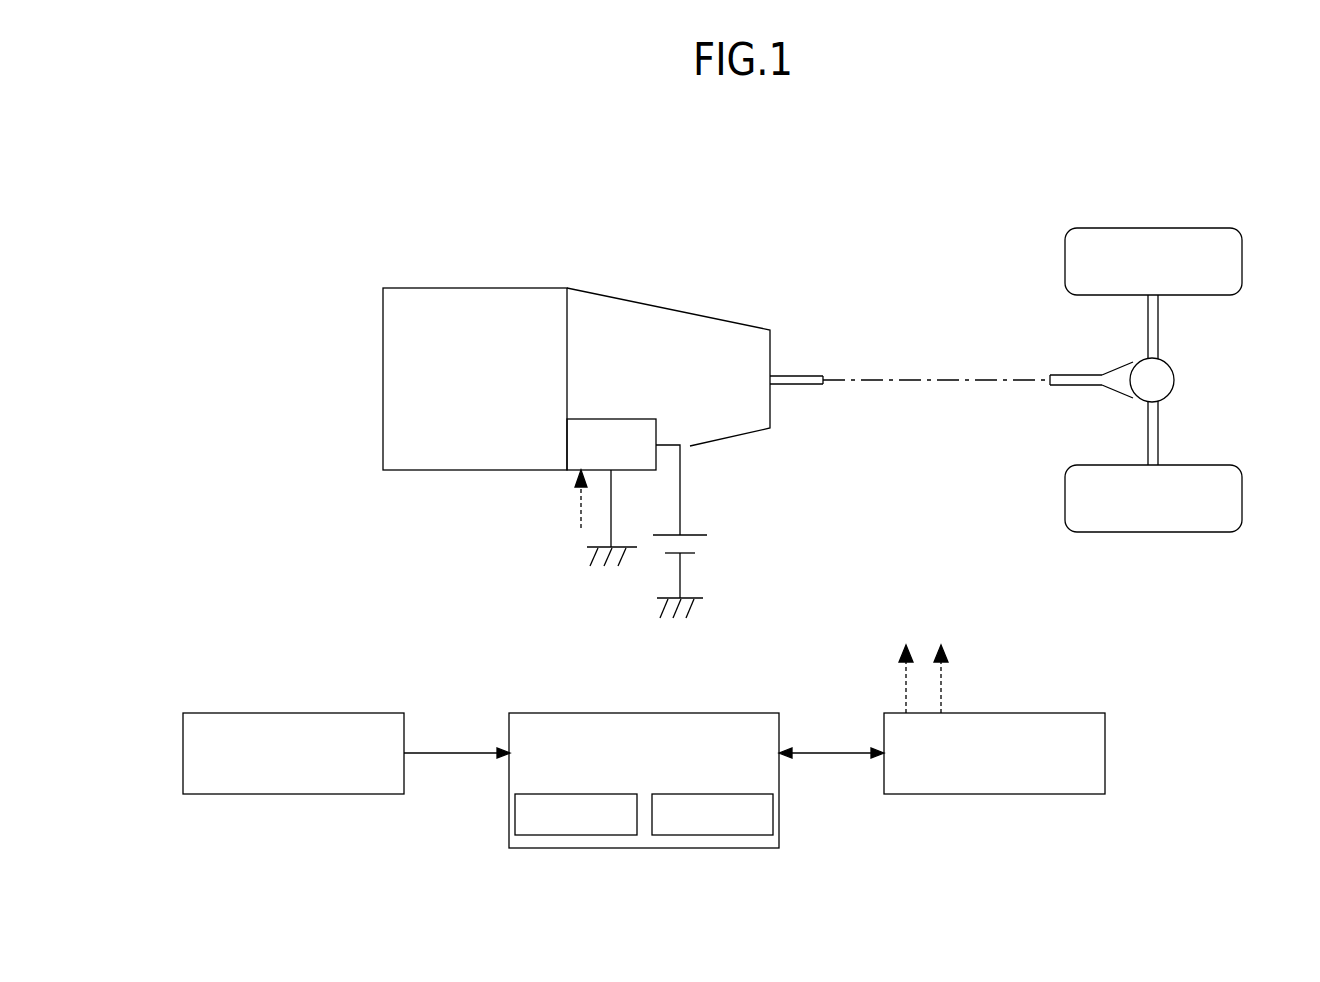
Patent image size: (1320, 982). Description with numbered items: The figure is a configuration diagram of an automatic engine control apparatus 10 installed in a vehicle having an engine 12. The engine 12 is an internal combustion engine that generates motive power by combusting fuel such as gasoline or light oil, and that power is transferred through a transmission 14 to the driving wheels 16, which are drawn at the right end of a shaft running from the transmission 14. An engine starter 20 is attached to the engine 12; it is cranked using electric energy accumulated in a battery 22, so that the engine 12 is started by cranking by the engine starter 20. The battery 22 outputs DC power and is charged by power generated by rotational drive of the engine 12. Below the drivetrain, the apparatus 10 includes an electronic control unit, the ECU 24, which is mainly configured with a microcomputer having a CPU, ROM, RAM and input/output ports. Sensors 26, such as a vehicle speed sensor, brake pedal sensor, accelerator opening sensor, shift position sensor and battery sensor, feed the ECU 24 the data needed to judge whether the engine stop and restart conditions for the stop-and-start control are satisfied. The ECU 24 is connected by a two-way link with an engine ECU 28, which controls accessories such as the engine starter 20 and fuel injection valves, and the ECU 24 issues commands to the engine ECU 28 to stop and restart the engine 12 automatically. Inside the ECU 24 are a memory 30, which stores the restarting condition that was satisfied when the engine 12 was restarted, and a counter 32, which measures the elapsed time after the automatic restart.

The automatic engine control apparatus 10 is at (962, 228).
The engine 12 is at (480, 288).
The transmission 14 is at (672, 307).
The driving wheels 16 is at (1155, 228).
The engine starter 20 is at (617, 419).
The battery 22 is at (693, 535).
The electronic control unit (ECU) 24 is at (644, 791).
The sensors 26 is at (303, 713).
The engine ECU 28 is at (1027, 713).
The memory 30 is at (578, 835).
The counter 32 is at (717, 835).